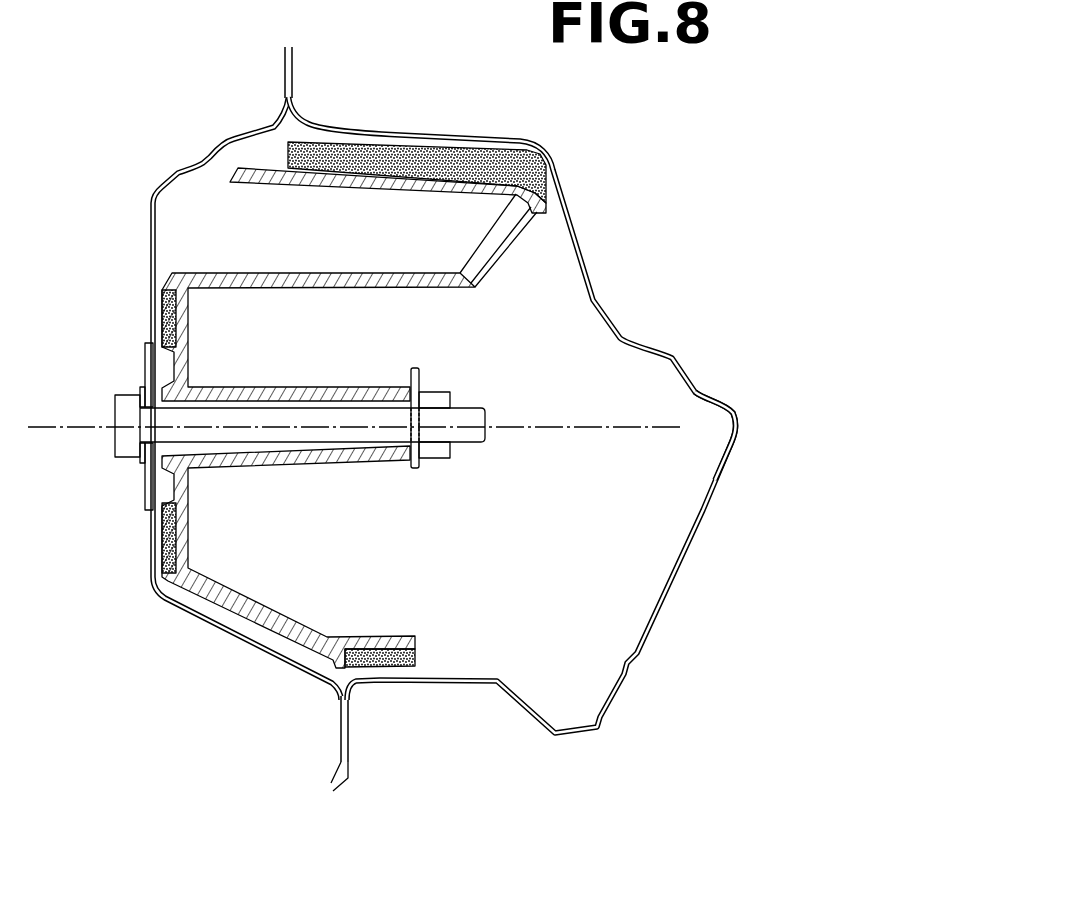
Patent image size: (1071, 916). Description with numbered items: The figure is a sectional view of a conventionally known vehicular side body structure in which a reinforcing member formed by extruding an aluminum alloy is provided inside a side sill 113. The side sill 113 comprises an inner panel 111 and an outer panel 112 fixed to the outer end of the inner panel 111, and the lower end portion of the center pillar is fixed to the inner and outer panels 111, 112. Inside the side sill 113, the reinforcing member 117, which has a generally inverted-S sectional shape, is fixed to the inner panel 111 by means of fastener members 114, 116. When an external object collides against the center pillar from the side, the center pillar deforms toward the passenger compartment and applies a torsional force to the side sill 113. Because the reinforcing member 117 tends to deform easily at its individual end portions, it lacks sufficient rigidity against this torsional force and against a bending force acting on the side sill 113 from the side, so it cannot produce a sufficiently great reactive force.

The inner panel 111 is at (160, 190).
The outer panel 112 is at (583, 247).
The side sill 113 is at (770, 420).
The fastener member 114 is at (319, 436).
The fastener member 116 is at (435, 452).
The reinforcing member 117 is at (353, 378).